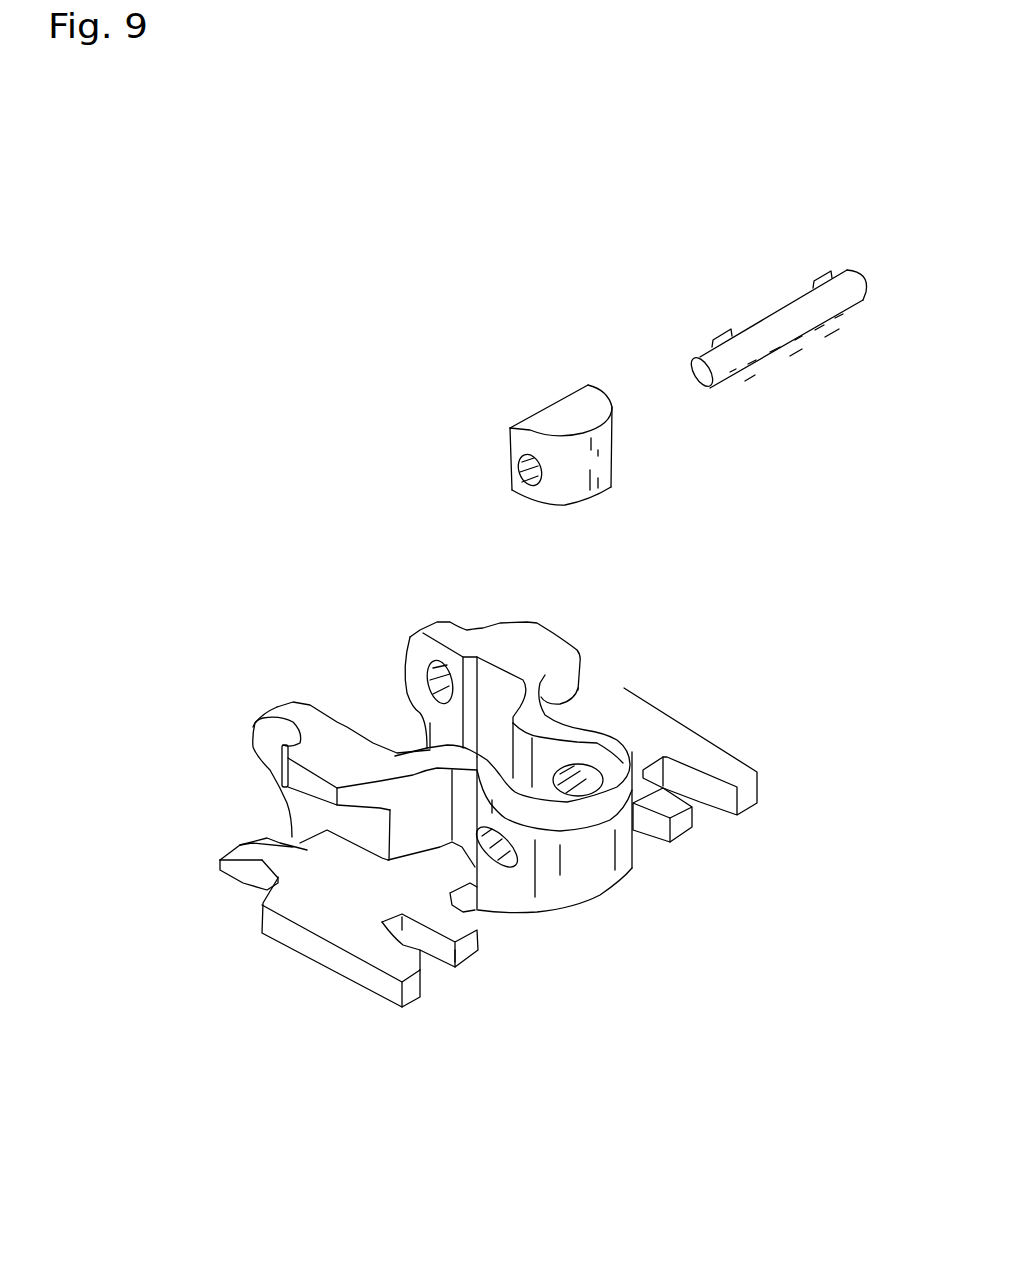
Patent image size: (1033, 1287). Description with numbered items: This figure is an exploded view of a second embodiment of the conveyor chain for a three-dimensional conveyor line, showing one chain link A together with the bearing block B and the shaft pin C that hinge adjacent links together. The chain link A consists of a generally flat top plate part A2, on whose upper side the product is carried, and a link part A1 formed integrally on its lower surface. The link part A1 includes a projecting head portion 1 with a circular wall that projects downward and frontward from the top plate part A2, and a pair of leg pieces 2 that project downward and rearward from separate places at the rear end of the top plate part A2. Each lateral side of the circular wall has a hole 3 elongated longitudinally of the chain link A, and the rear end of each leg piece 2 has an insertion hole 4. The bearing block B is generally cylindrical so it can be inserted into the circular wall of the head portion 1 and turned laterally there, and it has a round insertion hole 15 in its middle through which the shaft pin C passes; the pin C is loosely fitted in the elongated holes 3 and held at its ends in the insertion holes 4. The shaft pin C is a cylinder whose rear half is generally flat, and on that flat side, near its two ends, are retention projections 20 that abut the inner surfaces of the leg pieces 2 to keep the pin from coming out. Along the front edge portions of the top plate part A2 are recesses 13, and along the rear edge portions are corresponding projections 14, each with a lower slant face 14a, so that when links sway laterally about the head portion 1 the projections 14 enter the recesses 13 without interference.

The projecting head portion 1 is at (573, 875).
The leg pieces 2 is at (413, 652).
The elongated hole 3 is at (583, 707).
The insertion hole 4 is at (427, 683).
The recess 13 is at (439, 962).
The projection 14 is at (247, 885).
The lower slant face 14a is at (245, 842).
The round insertion hole 15 is at (527, 477).
The retention projection 20 is at (815, 284).
The chain link A is at (477, 912).
The link part A1 is at (585, 775).
The top plate part A2 is at (330, 910).
The bearing block B is at (550, 405).
The shaft pin C is at (797, 339).